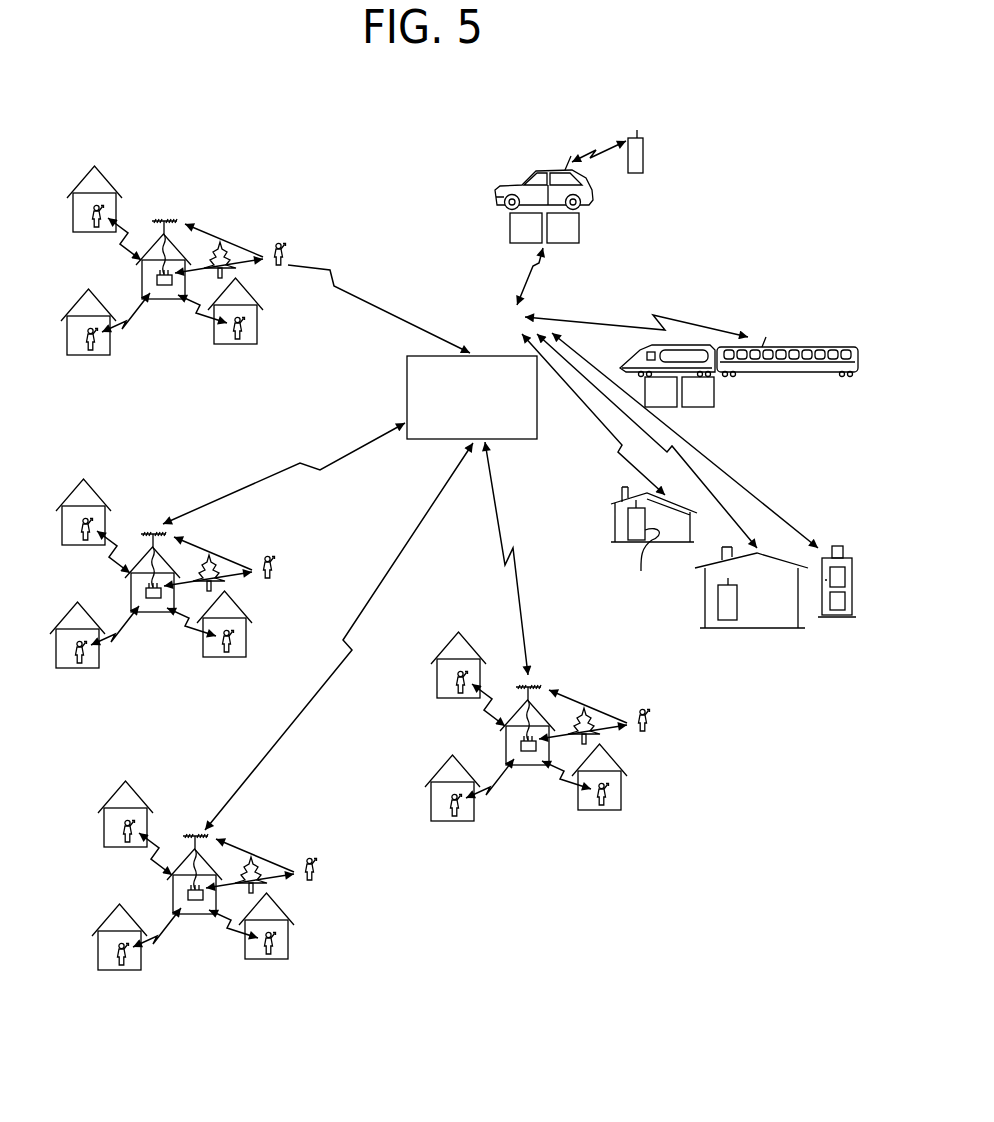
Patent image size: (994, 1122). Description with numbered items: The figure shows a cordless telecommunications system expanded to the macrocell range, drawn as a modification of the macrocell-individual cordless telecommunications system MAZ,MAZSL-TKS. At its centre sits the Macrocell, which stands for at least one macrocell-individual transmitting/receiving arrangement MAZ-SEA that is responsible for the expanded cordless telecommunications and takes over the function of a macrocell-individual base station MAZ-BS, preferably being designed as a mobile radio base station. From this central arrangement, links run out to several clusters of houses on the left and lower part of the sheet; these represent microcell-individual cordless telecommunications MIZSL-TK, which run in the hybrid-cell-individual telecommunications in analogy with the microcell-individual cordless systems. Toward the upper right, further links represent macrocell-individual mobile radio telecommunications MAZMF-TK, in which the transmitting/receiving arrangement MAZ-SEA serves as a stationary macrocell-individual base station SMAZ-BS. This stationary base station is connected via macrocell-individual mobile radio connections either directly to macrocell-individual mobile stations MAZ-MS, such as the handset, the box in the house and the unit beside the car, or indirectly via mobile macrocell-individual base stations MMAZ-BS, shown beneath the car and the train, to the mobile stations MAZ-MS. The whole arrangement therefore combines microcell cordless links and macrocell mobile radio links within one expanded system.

The macrocell-individual mobile station MAZ-MS is at (643, 155).
The mobile macrocell-individual base station MMAZ-BS is at (510, 228).
The macrocell-individual mobile radio telecommunications MAZMF-TK is at (546, 283).
The macrocell Macrocell is at (714, 385).
The microcell-individual cordless telecommunications MIZSL-TK is at (400, 543).
The macrocell-individual transmitting/receiving arrangement MAZ-SEA is at (520, 440).
The macrocell-individual base station MAZ-BS is at (615, 503).
The stationary macrocell-individual base station SMAZ-BS is at (582, 535).
The macrocell-individual cordless telecommunications system MAZ,MAZSL-TKS is at (556, 624).